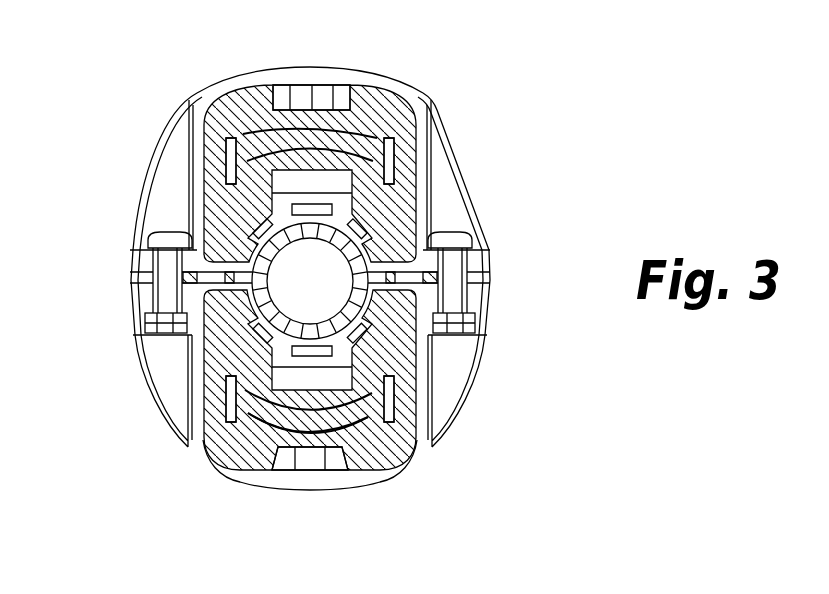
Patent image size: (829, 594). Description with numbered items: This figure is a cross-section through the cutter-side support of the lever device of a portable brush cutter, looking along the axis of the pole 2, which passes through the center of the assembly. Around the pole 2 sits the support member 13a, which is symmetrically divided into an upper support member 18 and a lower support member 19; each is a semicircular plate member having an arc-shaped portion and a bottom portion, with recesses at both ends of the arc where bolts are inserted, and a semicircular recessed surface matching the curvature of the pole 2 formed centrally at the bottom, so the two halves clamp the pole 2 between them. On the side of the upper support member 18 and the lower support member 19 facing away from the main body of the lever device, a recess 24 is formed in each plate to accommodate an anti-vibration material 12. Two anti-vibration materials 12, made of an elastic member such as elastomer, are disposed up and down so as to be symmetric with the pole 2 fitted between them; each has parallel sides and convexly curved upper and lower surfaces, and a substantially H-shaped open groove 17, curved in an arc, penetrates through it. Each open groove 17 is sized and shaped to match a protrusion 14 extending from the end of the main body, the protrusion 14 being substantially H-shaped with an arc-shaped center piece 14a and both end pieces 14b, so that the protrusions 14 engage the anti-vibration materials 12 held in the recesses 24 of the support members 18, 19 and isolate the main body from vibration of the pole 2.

The pole 2 is at (203, 363).
The anti-vibration material 12 is at (252, 104).
The support member 13a is at (482, 176).
The protrusion 14 is at (339, 111).
The center piece 14a is at (345, 422).
The end pieces 14b is at (392, 410).
The open groove 17 is at (296, 128).
The upper support member 18 is at (450, 127).
The lower support member 19 is at (453, 423).
The recess 24 is at (212, 152).